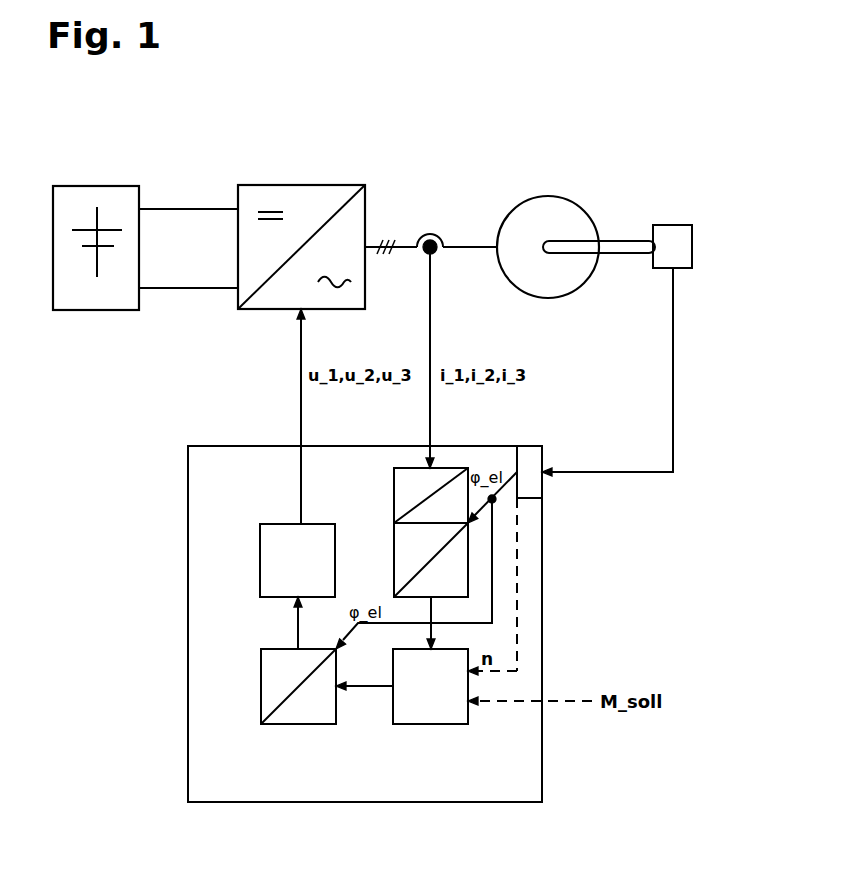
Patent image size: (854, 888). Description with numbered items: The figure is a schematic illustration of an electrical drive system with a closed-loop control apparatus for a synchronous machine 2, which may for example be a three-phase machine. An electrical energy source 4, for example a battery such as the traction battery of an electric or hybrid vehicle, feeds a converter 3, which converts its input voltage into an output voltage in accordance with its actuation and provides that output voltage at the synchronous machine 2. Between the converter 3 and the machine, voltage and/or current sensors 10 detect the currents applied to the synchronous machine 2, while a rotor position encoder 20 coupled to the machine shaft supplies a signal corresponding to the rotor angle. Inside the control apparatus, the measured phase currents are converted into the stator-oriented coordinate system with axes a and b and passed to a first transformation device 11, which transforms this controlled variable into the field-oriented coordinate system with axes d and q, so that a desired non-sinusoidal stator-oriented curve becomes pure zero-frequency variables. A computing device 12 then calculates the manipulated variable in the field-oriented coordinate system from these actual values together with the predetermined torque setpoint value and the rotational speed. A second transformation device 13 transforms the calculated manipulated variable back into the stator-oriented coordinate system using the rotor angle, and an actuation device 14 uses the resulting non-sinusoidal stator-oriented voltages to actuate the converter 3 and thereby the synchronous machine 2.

The synchronous machine 2 is at (548, 196).
The converter 3 is at (253, 310).
The electrical energy source 4 is at (103, 310).
The voltage and/or current sensors 10 is at (432, 234).
The first transformation device 11 is at (468, 560).
The computing device 12 is at (430, 724).
The second transformation device 13 is at (302, 724).
The actuation device 14 is at (260, 560).
The rotor position encoder 20 is at (673, 225).